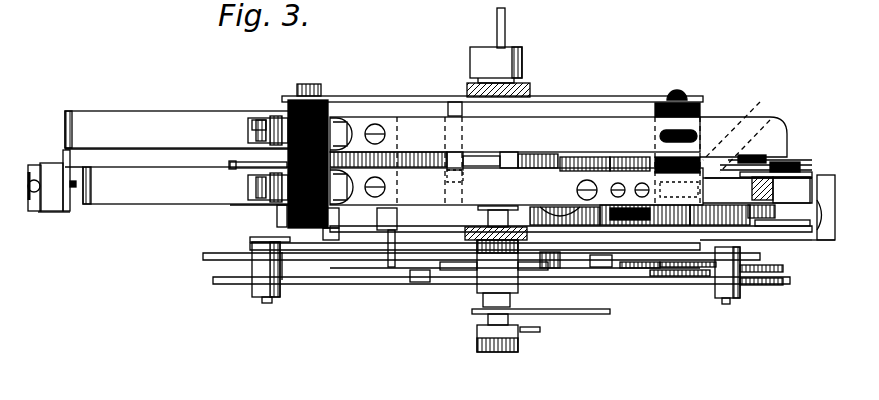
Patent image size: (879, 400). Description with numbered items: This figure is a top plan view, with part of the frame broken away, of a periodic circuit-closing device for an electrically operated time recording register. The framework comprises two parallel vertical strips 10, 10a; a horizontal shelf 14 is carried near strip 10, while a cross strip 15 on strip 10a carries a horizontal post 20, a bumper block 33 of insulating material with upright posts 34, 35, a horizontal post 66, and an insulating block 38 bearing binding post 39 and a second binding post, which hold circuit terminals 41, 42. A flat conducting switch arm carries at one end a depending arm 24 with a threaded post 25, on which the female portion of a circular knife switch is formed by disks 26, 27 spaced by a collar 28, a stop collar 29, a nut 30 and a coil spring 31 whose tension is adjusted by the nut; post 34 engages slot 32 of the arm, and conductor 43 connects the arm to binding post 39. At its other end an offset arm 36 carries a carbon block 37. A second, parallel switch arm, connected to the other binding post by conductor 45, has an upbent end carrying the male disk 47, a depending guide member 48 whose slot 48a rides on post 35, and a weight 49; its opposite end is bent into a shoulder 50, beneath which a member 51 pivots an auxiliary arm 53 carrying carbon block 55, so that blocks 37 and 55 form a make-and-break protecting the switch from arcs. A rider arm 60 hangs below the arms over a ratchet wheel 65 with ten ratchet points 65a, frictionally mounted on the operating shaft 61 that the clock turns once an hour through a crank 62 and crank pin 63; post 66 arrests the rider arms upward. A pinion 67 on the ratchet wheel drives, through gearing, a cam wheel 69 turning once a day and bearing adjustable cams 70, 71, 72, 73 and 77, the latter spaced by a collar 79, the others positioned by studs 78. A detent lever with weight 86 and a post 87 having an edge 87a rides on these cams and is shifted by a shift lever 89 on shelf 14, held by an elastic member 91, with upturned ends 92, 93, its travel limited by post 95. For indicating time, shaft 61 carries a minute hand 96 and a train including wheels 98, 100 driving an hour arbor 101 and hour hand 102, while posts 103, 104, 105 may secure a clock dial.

The vertical strip 10 is at (465, 232).
The vertical strip 10a is at (527, 90).
The horizontal shelf 14 is at (827, 207).
The strip 15 is at (352, 100).
The post 20 is at (330, 242).
The depending arm 24 is at (780, 166).
The post 25 is at (774, 212).
The disk 26 is at (796, 165).
The disk 27 is at (798, 177).
The collar 28 is at (798, 173).
The collar 29 is at (780, 160).
The threaded nut 30 is at (756, 222).
The elastic member 31 is at (752, 192).
The slot 32 is at (700, 118).
The bumper block 33 is at (652, 104).
The upright post 34 is at (678, 130).
The upright post 35 is at (743, 137).
The offset arm 36 is at (66, 140).
The block 37 is at (52, 170).
The block 38 is at (292, 99).
The binding post 39 is at (248, 128).
The terminal 41 is at (229, 165).
The terminal 42 is at (262, 118).
The electrical conductor 43 is at (342, 96).
The electric conductor 45 is at (380, 232).
The third disk 47 is at (754, 156).
The guide member 48 is at (700, 212).
The slot 48a is at (748, 150).
The weight 49 is at (594, 160).
The shoulder 50 is at (78, 210).
The member 51 is at (234, 206).
The auxiliary arm 53 is at (66, 213).
The block 55 is at (30, 212).
The rider arm 60 is at (470, 160).
The operating shaft 61 is at (495, 208).
The crank 62 is at (470, 52).
The crank pin 63 is at (497, 30).
The ratchet wheel 65 is at (536, 154).
The ratchet points 65a is at (636, 158).
The horizontal post 66 is at (452, 104).
The pinion 67 is at (510, 152).
The cam wheel 69 is at (716, 260).
The adjustable cam 70 is at (770, 286).
The adjustable cam 71 is at (622, 270).
The adjustable cam 72 is at (282, 280).
The adjustable cam 73 is at (196, 258).
The adjustable cam 77 is at (672, 278).
The stud 78 is at (600, 268).
The collar 79 is at (550, 270).
The weight 86 is at (388, 262).
The post 87 is at (395, 228).
The edge 87a is at (414, 282).
The shift lever 89 is at (710, 252).
The elastic member 91 is at (616, 224).
The upturned end 92 is at (826, 240).
The upturned end 93 is at (565, 224).
The post 95 is at (748, 240).
The minute hand 96 is at (606, 314).
The wheel 98 is at (477, 270).
The wheel 100 is at (460, 272).
The hour arbor 101 is at (540, 330).
The hour hand 102 is at (516, 348).
The post 103 is at (258, 290).
The post 104 is at (740, 298).
The post 105 is at (468, 300).